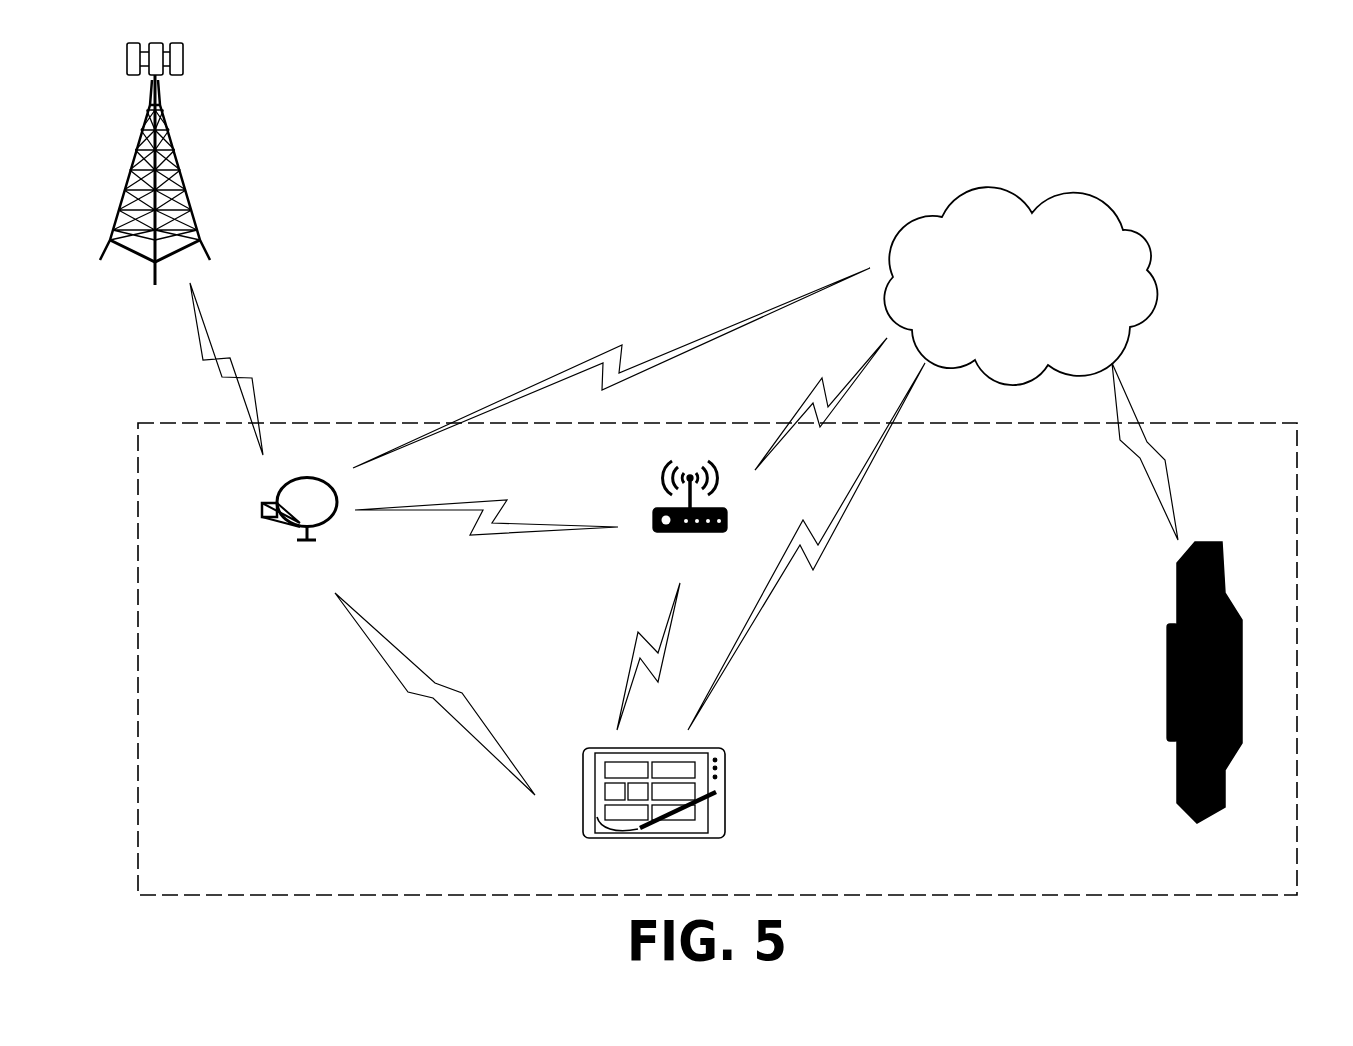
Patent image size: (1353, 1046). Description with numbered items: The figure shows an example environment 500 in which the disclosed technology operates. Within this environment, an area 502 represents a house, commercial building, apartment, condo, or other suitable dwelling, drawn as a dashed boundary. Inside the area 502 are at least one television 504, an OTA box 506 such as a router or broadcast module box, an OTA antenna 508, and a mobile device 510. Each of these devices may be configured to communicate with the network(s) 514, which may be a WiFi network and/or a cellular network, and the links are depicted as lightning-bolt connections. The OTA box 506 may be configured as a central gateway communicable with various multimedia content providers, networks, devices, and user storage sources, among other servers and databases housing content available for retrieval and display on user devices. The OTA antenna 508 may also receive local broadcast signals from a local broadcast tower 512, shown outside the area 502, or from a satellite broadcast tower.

The environment 500 is at (1210, 158).
The area 502 is at (1279, 462).
The television 504 is at (1233, 869).
The OTA box 506 is at (708, 568).
The OTA antenna 508 is at (356, 564).
The mobile device 510 is at (670, 879).
The local broadcast tower 512 is at (176, 351).
The network(s) 514 is at (1020, 286).